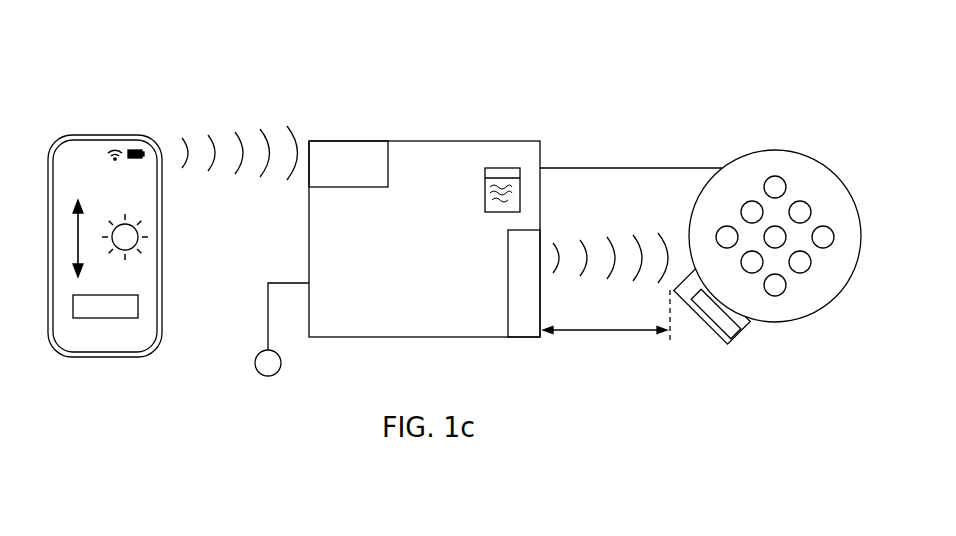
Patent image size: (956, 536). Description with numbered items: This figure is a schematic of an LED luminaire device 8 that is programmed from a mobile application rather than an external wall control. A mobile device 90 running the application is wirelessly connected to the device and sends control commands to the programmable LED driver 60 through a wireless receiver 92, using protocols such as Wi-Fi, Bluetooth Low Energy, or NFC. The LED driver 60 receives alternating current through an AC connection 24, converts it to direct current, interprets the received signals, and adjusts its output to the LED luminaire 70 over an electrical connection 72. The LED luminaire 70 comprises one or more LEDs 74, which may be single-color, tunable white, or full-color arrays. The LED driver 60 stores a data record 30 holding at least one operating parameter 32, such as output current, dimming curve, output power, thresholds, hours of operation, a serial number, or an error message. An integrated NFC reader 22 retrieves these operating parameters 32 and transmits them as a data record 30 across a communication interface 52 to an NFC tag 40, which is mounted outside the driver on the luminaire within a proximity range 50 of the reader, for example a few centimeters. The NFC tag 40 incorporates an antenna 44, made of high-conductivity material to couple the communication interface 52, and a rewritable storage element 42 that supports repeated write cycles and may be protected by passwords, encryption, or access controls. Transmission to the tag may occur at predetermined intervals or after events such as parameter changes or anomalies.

The LED luminaire device 8 is at (254, 68).
The mobile device 90 is at (113, 133).
The wireless receiver 92 is at (337, 157).
The LED driver 60 is at (427, 259).
The data record 30 is at (485, 170).
The operating parameter 32 is at (494, 190).
The NFC reader 22 is at (540, 287).
The AC connection 24 is at (268, 318).
The electrical connection 72 is at (625, 168).
The communication interface 52 is at (608, 232).
The proximity range 50 is at (598, 335).
The LED luminaire 70 is at (837, 170).
The LEDs 74 is at (773, 176).
The NFC tag 40 is at (704, 323).
The rewritable storage element 42 is at (741, 328).
The antenna 44 is at (682, 298).